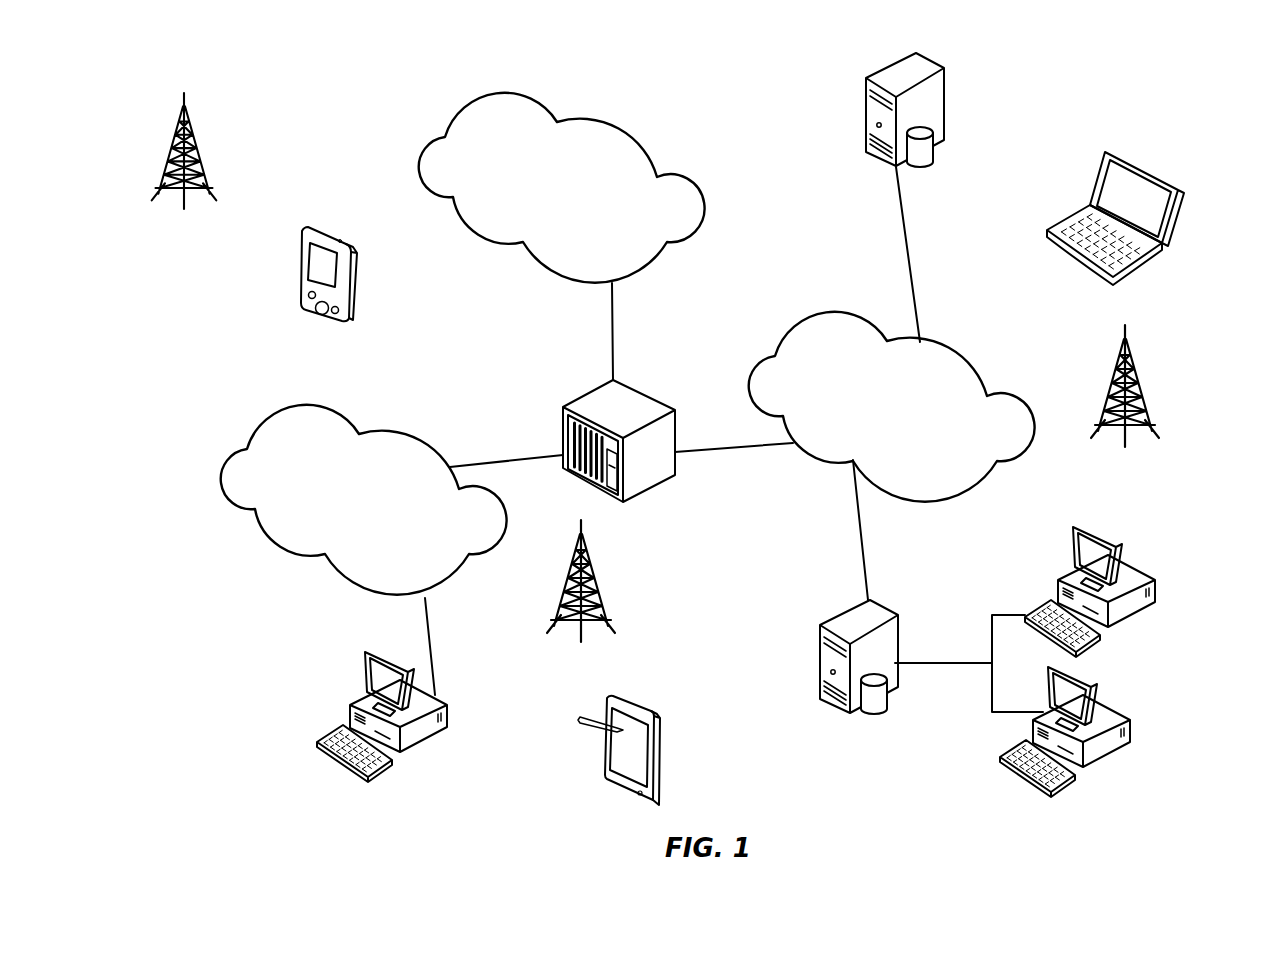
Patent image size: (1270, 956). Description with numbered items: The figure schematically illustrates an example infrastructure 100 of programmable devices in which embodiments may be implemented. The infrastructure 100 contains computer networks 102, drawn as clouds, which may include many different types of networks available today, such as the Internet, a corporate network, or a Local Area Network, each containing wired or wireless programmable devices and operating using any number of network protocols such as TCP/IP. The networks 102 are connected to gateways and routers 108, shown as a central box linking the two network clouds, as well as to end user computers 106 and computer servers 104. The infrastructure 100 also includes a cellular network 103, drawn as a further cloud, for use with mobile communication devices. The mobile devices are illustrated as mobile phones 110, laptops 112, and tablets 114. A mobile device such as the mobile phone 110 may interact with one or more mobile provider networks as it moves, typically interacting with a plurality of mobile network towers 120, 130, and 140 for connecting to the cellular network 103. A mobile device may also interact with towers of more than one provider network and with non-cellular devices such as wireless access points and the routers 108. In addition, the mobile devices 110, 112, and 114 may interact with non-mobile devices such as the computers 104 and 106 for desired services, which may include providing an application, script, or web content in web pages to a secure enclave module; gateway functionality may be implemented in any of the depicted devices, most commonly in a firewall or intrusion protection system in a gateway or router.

The infrastructure 100 is at (1032, 138).
The computer networks 102 is at (643, 453).
The cellular network 103 is at (562, 180).
The computer servers 104 is at (829, 379).
The end user computers 106 is at (770, 642).
The gateways and routers 108 is at (647, 423).
The mobile phones 110 is at (363, 254).
The laptops 112 is at (1144, 209).
The tablets 114 is at (655, 735).
The mobile network tower 120 is at (581, 597).
The mobile network tower 130 is at (1125, 403).
The mobile network tower 140 is at (184, 171).